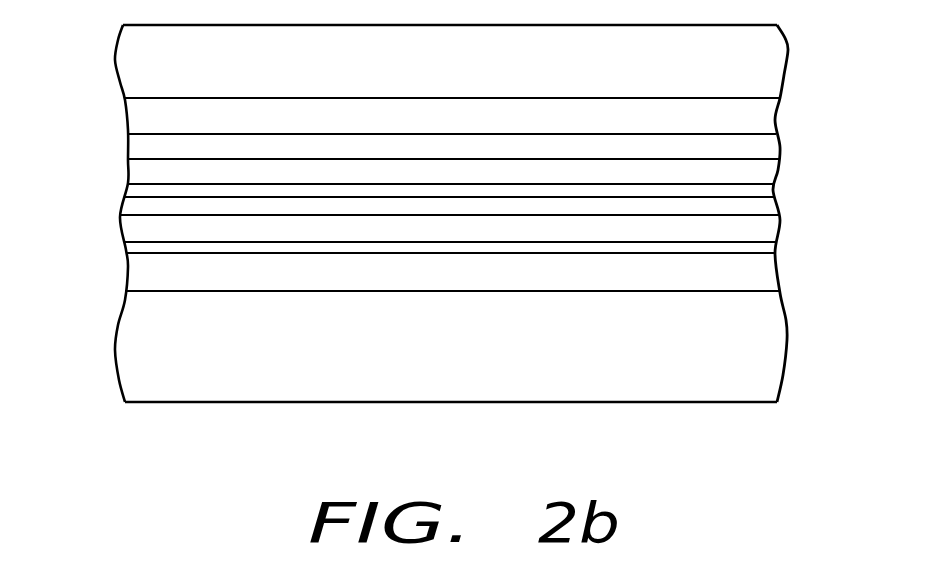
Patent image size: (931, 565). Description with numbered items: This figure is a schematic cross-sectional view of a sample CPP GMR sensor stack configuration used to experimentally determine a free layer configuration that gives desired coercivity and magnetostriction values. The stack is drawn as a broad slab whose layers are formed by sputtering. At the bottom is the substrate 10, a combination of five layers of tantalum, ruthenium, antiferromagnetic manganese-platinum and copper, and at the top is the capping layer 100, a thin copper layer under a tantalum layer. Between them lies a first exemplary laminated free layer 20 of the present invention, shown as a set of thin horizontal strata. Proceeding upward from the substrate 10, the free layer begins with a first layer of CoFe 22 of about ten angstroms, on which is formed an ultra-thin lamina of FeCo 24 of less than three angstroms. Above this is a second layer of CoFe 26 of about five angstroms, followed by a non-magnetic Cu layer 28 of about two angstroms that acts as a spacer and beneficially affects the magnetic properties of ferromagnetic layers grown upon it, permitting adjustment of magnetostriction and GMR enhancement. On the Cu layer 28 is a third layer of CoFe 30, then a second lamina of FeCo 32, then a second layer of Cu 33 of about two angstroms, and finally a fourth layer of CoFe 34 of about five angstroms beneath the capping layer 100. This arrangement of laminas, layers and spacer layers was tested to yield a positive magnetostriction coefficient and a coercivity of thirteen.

The capping layer 100 is at (112, 25).
The free layer 20 is at (112, 100).
The substrate layer 10 is at (110, 292).
The first layer of CoFe 22 is at (760, 271).
The lamina of FeCo 24 is at (760, 245).
The second layer of CoFe 26 is at (765, 227).
The Cu layer 28 is at (765, 206).
The third layer of CoFe 30 is at (765, 188).
The second lamina of FeCo 32 is at (760, 171).
The second layer of Cu 33 is at (762, 147).
The fourth layer of CoFe 34 is at (762, 119).